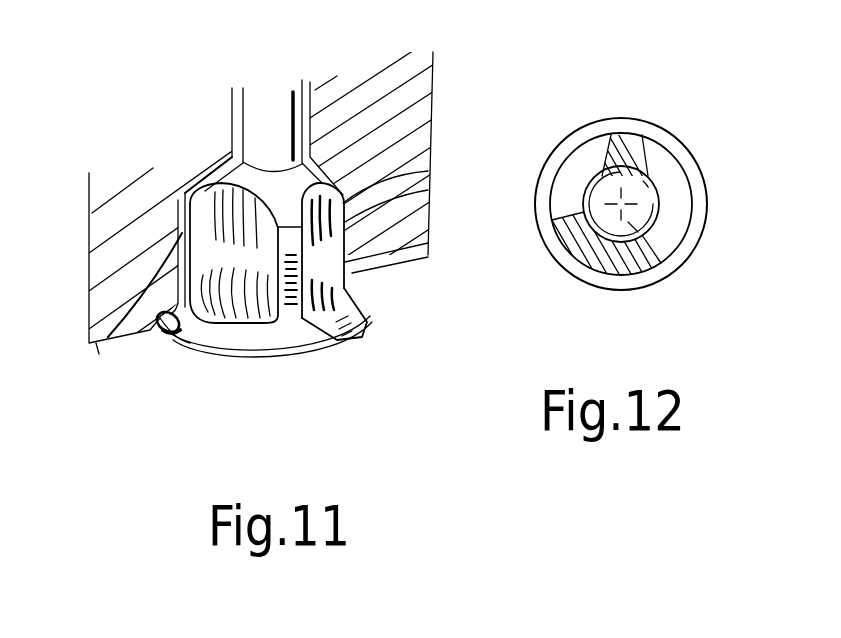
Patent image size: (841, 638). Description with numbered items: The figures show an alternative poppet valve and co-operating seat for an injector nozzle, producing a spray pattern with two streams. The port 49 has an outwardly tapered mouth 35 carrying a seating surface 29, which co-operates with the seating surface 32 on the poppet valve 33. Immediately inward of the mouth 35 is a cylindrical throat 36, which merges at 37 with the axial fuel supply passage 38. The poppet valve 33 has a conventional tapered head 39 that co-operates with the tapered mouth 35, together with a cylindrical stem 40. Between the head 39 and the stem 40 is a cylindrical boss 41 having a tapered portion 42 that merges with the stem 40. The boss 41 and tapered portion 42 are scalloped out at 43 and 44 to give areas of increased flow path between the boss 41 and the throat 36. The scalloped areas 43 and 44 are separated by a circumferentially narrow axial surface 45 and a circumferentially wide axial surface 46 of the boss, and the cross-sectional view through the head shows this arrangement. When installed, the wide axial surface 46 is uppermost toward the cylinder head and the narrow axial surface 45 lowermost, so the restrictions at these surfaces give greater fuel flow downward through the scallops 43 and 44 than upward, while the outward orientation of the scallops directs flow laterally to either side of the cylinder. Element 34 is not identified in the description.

In FIG. 11, the seating surface 29 is at (180, 340).
In FIG. 11, the seating surface 32 is at (263, 340).
In FIG. 11, the poppet valve 33 is at (378, 318).
In FIG. 11, the housing 34 is at (95, 299).
In FIG. 11, the tapered mouth 35 is at (158, 322).
In FIG. 11, the cylindrical throat 36 is at (182, 227).
In FIG. 11, the merging region 37 is at (200, 177).
In FIG. 11, the axial fuel supply passage 38 is at (232, 97).
In FIG. 11, the tapered head 39 is at (310, 357).
In FIG. 12, the tapered head 39 is at (696, 165).
In FIG. 11, the cylindrical stem 40 is at (278, 92).
In FIG. 12, the cylindrical stem 40 is at (658, 268).
In FIG. 11, the cylindrical boss 41 is at (99, 363).
In FIG. 11, the tapered portion 42 is at (220, 163).
In FIG. 11, the scalloped area 43 is at (215, 318).
In FIG. 12, the scalloped area 43 is at (677, 195).
In FIG. 11, the scalloped area 44 is at (428, 245).
In FIG. 12, the scalloped area 44 is at (578, 160).
In FIG. 11, the circumferentially narrow axial surface 45 is at (310, 338).
In FIG. 12, the circumferentially narrow axial surface 45 is at (628, 133).
In FIG. 11, the circumferentially wide axial surface 46 is at (427, 171).
In FIG. 12, the circumferentially wide axial surface 46 is at (597, 277).
In FIG. 11, the port 49 is at (177, 263).